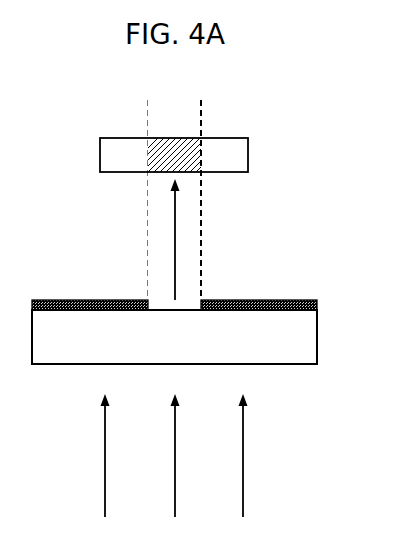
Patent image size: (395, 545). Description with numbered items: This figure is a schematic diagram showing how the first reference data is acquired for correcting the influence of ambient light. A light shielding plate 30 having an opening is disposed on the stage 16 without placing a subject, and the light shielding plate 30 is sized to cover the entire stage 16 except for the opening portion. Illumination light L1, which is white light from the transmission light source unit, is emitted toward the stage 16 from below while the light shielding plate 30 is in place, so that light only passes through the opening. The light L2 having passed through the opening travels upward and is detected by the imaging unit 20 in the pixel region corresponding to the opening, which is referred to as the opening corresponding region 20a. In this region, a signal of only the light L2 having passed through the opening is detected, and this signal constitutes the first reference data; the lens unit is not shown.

The imaging unit 20 is at (249, 147).
The opening corresponding region 20a is at (174, 148).
The light having passed through the opening L2 is at (176, 243).
The light shielding plate 30 is at (272, 298).
The stage 16 is at (319, 333).
The illumination light L1 is at (244, 475).